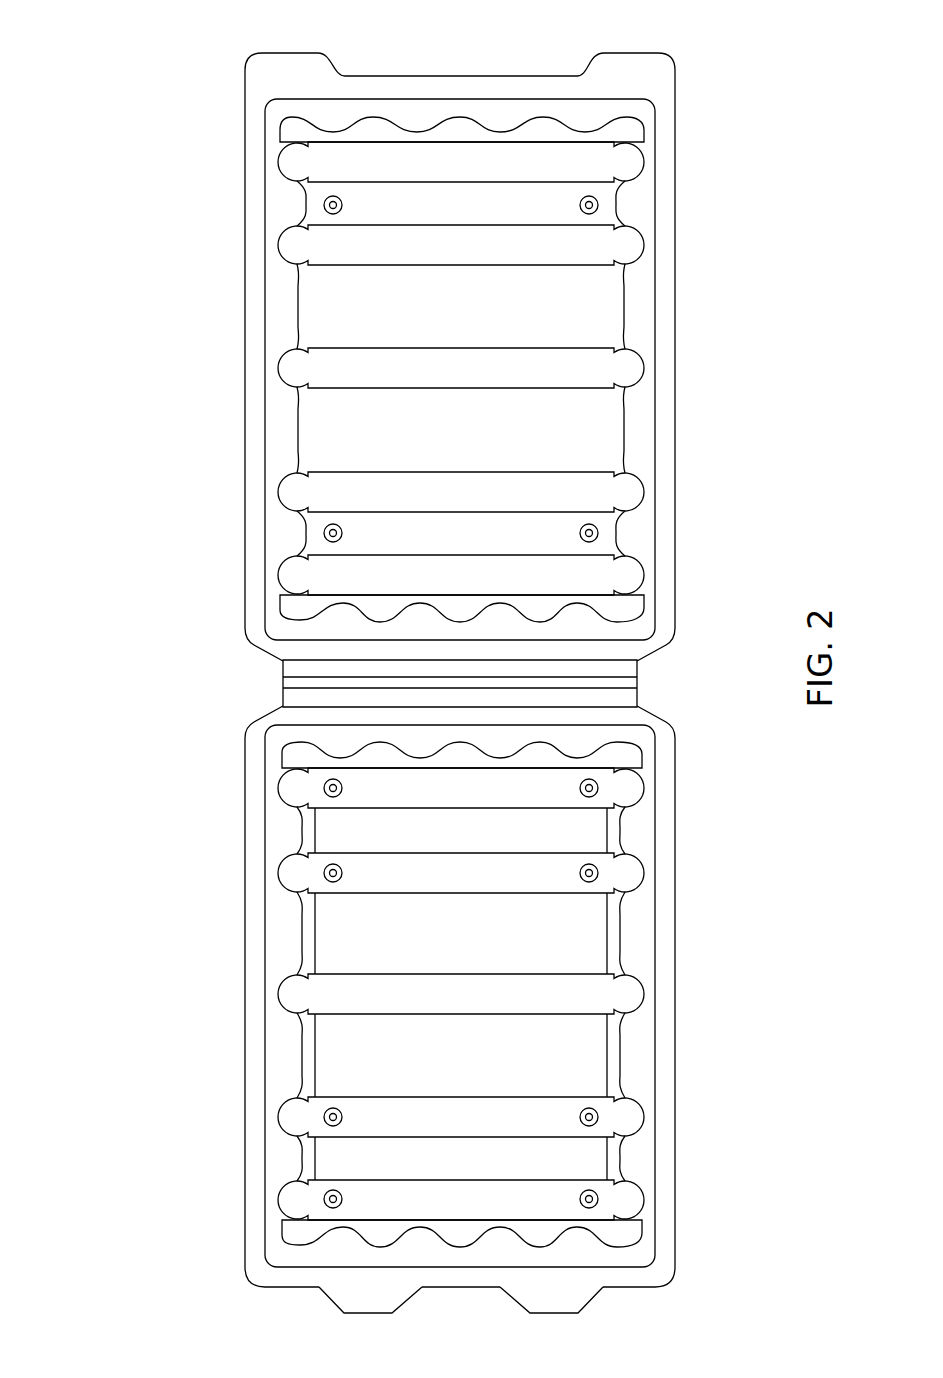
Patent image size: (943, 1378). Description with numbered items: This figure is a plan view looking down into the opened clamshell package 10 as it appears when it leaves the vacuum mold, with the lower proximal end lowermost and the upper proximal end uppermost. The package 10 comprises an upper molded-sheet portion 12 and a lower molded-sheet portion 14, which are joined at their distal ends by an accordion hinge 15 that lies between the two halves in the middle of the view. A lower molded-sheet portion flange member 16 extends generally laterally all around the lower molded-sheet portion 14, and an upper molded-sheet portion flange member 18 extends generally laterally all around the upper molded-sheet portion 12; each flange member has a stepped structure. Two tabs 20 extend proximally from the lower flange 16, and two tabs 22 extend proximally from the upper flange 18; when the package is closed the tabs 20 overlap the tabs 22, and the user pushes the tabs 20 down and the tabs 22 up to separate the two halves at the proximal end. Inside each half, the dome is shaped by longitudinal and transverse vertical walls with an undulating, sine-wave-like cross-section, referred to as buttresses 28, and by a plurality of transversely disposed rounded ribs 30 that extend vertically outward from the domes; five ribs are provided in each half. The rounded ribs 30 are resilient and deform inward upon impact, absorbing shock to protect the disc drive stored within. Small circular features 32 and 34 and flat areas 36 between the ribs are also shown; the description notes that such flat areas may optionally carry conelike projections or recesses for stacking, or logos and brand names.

The clamshell package 10 is at (728, 52).
The upper molded-sheet portion 12 is at (185, 352).
The lower molded-sheet portion 14 is at (200, 993).
The accordion hinge 15 is at (637, 668).
The lower molded-sheet portion flange member 16 is at (662, 828).
The upper molded-sheet portion flange member 18 is at (660, 462).
The tabs 20 is at (352, 1306).
The tabs 22 is at (272, 88).
The buttresses 28 is at (594, 125).
The rounded ribs 30 is at (472, 1214).
The locating pins (upper member) 32 is at (580, 533).
The locating holes (lower member) 34 is at (580, 1199).
The cavities / recesses 36 is at (355, 1067).